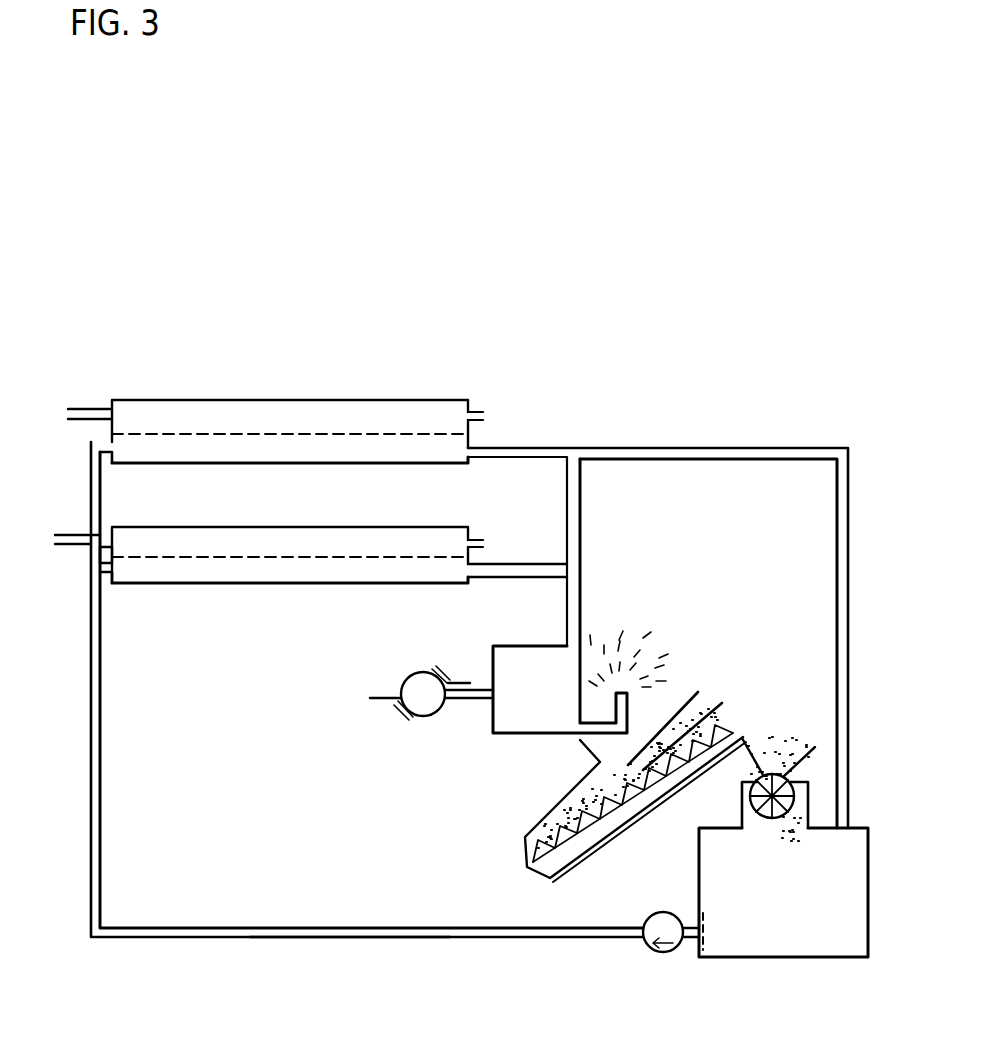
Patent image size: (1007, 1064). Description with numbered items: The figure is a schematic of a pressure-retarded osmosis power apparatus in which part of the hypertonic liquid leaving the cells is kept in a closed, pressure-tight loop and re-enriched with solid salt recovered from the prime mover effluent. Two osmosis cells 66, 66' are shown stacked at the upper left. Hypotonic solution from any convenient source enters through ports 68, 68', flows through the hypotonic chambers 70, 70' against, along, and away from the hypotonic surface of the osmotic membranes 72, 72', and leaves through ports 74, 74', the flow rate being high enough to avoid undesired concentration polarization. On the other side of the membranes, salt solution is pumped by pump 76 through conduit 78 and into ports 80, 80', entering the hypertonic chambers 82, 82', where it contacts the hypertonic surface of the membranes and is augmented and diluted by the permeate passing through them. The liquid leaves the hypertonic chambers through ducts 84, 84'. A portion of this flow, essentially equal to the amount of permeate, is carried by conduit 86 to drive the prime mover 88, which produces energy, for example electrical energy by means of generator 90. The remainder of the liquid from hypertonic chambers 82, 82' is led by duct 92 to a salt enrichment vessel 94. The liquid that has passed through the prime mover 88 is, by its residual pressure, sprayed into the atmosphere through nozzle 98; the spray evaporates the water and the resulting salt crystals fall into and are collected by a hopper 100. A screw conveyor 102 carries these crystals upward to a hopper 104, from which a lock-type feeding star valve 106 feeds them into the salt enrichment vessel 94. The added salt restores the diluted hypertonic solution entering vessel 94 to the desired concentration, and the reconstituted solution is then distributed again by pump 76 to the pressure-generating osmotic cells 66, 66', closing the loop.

The osmosis cell 66 is at (305, 426).
The osmosis cell 66' is at (291, 557).
The port 68 is at (505, 380).
The port 68' is at (509, 516).
The hypotonic chamber 70 is at (290, 401).
The hypotonic chamber 70' is at (290, 533).
The osmotic membrane 72 is at (290, 387).
The osmotic membrane 72' is at (290, 521).
The port 74 is at (100, 379).
The port 74' is at (72, 521).
The pump 76 is at (656, 952).
The conduit 78 is at (298, 940).
The port 80 is at (133, 481).
The port 80' is at (136, 603).
The hypertonic chamber 82 is at (389, 488).
The hypertonic chamber 82' is at (392, 607).
The duct 84 is at (538, 509).
The duct 84' is at (517, 553).
The conduit 86 is at (582, 606).
The prime mover 88 is at (543, 646).
The generator 90 is at (432, 716).
The duct 92 is at (702, 448).
The salt enrichment vessel 94 is at (805, 958).
The nozzle 98 is at (628, 696).
The hopper 100 is at (593, 752).
The screw conveyor 102 is at (722, 735).
The hopper 104 is at (808, 753).
The lock-type feeding star valve 106 is at (742, 800).